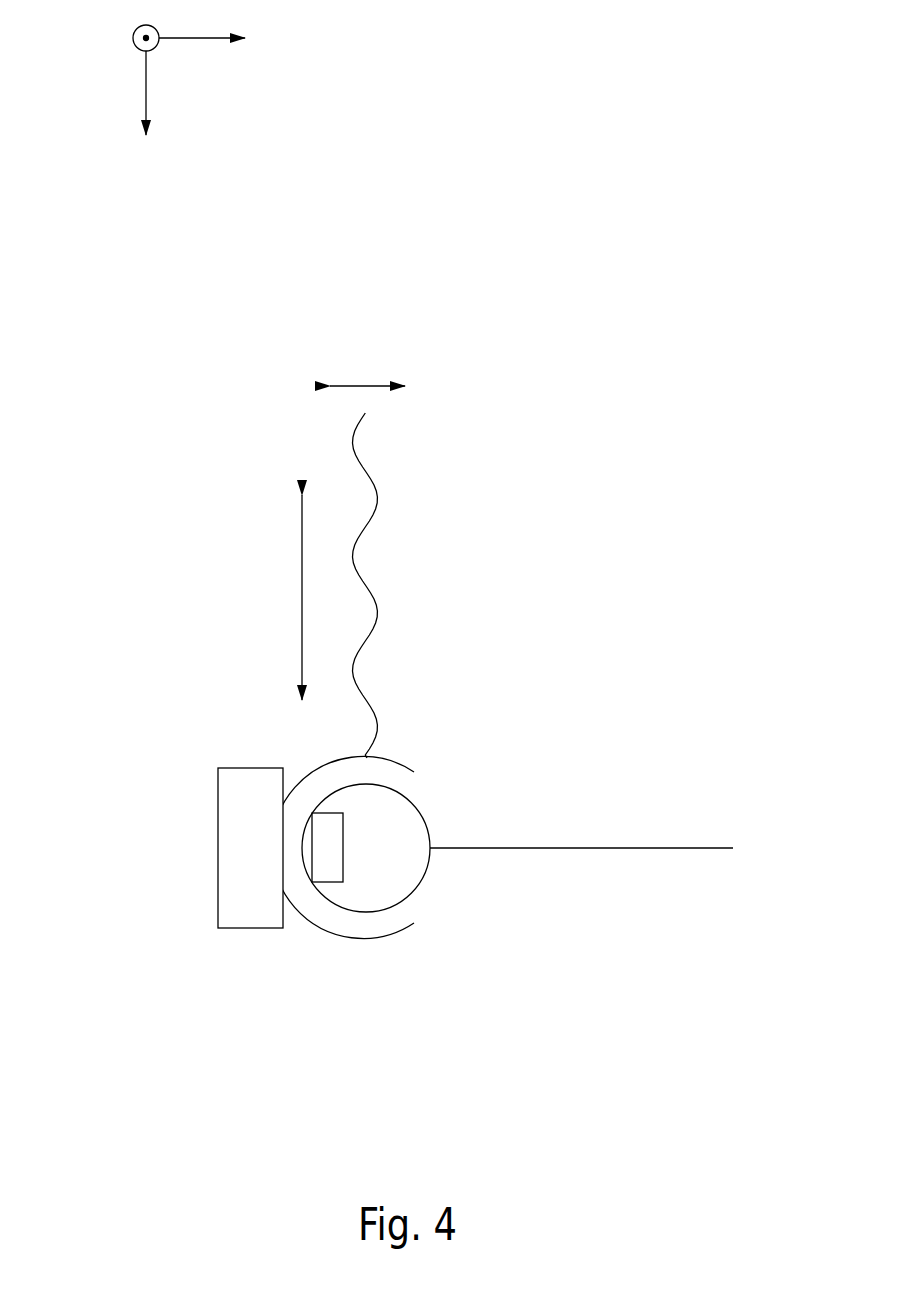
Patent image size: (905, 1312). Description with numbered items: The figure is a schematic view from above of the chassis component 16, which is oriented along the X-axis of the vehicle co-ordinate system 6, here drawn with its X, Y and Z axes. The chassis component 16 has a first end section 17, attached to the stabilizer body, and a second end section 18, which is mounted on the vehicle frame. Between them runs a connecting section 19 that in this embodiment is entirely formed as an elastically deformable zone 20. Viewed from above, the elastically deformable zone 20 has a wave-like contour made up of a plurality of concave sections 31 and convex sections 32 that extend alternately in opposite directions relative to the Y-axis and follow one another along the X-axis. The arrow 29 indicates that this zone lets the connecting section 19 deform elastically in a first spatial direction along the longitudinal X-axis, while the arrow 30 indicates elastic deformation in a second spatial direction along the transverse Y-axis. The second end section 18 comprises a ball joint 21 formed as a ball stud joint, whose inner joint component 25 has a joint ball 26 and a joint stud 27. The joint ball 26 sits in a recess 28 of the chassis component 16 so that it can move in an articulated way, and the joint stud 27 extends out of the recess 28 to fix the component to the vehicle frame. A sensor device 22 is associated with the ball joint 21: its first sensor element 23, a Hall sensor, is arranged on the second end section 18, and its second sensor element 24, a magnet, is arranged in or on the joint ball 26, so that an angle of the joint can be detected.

The vehicle co-ordinate system 6 is at (105, 73).
The chassis component 16 is at (697, 483).
The first end section 17 is at (423, 571).
The second end section 18 is at (421, 919).
The connecting section 19 is at (345, 620).
The elastically deformable zone 20 is at (446, 571).
The ball joint 21 is at (410, 890).
The sensor device 22 is at (203, 922).
The first sensor element 23 is at (242, 848).
The second sensor element 24 is at (328, 850).
The inner joint component 25 is at (431, 829).
The joint ball 26 is at (408, 865).
The joint stud 27 is at (620, 848).
The recess 28 is at (379, 920).
The arrow 29 is at (302, 580).
The arrow 30 is at (370, 384).
The concave sections 31 is at (340, 437).
The convex sections 32 is at (388, 502).